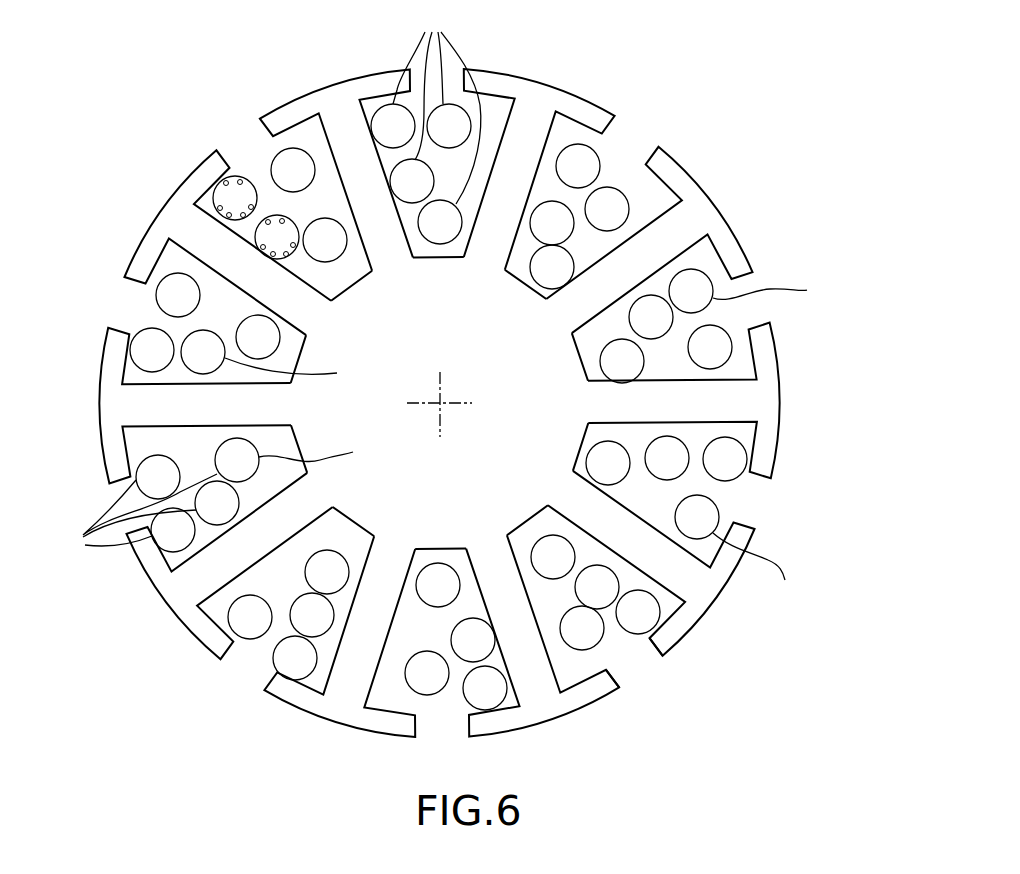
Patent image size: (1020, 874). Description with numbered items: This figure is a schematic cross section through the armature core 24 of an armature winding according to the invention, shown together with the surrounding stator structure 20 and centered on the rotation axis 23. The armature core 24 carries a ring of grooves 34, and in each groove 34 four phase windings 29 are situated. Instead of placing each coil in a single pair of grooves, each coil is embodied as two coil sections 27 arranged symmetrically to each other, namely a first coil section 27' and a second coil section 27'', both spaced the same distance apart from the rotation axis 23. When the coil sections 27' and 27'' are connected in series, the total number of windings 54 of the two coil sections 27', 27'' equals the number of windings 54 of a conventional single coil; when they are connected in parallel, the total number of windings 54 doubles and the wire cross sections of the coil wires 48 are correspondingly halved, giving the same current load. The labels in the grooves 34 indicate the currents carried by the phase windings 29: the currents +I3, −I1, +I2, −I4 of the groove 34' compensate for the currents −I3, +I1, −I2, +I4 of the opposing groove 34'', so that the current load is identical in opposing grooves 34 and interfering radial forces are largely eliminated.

The stator 20 is at (714, 166).
The rotation axis 23 is at (440, 403).
The armature core 24 is at (732, 257).
The coil sections 27 is at (437, 104).
The coil section 27' is at (778, 294).
The coil section 27'' is at (519, 487).
The phase windings 29 is at (137, 516).
The groove 34 is at (572, 169).
The groove 34' is at (174, 365).
The opposing groove 34'' is at (700, 563).
The coil wires 48 is at (276, 215).
The windings 54 is at (641, 670).